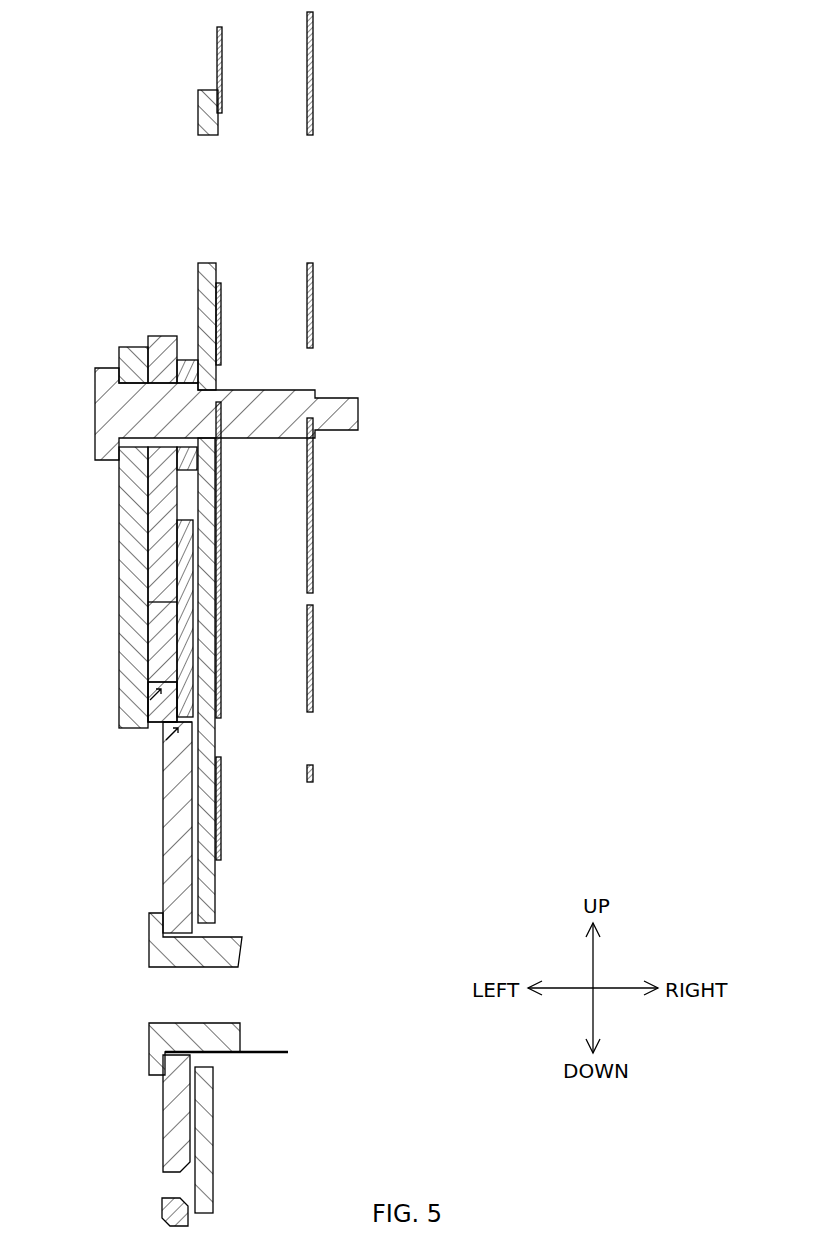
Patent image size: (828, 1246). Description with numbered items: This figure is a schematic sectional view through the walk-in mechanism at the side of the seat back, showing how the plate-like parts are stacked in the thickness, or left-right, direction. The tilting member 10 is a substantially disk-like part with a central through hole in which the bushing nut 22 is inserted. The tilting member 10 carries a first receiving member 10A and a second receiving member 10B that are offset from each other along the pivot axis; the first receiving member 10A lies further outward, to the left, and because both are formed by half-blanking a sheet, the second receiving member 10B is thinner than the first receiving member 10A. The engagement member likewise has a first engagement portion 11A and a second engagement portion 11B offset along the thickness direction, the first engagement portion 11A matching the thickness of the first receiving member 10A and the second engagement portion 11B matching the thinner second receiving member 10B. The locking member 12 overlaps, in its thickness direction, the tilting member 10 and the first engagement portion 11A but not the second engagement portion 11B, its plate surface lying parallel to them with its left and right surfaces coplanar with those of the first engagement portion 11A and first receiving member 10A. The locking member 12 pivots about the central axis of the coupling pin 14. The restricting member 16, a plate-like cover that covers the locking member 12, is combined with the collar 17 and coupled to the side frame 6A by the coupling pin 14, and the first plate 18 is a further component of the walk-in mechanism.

The side frame 6A is at (314, 494).
The tilting member 10 is at (172, 822).
The first receiving member 10A is at (148, 707).
The second receiving member 10B is at (162, 743).
The first engagement portion 11A is at (162, 647).
The second engagement portion 11B is at (193, 610).
The locking member 12 is at (203, 493).
The coupling pin 14 is at (103, 413).
The restricting member 16 is at (130, 535).
The collar 17 is at (192, 363).
The first plate 18 is at (208, 875).
The bushing nut 22 is at (228, 953).